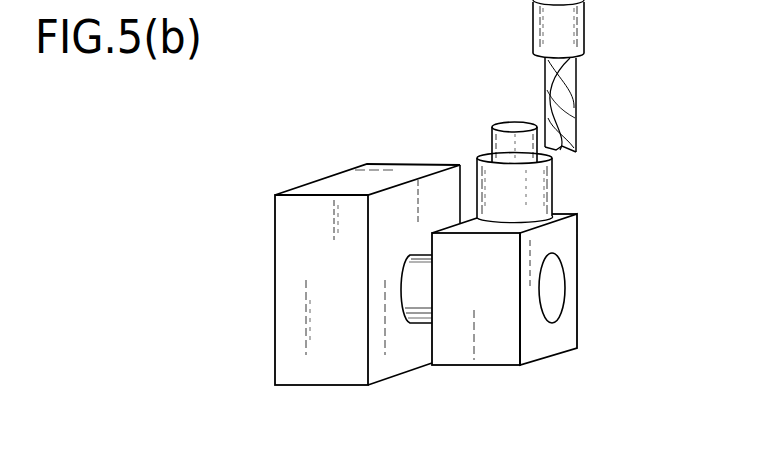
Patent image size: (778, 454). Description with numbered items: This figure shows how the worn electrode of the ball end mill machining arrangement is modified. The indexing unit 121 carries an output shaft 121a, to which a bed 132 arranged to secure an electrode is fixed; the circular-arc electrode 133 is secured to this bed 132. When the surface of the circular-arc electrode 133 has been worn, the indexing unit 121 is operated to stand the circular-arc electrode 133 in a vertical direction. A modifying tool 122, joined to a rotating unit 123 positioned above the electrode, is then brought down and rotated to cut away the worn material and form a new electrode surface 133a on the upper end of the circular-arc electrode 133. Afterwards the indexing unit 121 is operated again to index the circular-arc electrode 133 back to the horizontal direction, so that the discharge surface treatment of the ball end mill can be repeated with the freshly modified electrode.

The indexing unit 121 is at (332, 182).
The output shaft 121a is at (415, 323).
The modifying tool 122 is at (568, 108).
The rotating unit 123 is at (584, 28).
The bed 132 is at (555, 348).
The circular-arc electrode 133 is at (549, 183).
The new electrode surface 133a is at (480, 155).